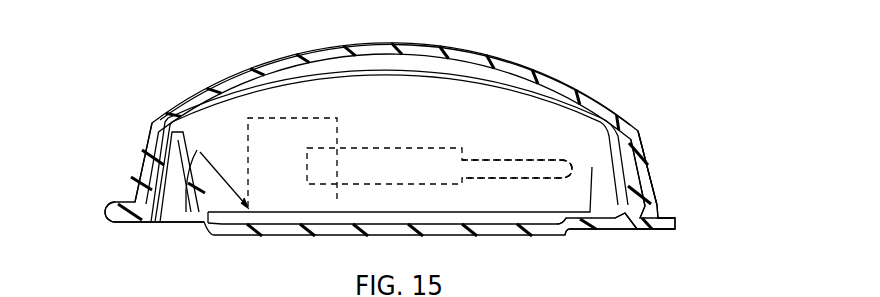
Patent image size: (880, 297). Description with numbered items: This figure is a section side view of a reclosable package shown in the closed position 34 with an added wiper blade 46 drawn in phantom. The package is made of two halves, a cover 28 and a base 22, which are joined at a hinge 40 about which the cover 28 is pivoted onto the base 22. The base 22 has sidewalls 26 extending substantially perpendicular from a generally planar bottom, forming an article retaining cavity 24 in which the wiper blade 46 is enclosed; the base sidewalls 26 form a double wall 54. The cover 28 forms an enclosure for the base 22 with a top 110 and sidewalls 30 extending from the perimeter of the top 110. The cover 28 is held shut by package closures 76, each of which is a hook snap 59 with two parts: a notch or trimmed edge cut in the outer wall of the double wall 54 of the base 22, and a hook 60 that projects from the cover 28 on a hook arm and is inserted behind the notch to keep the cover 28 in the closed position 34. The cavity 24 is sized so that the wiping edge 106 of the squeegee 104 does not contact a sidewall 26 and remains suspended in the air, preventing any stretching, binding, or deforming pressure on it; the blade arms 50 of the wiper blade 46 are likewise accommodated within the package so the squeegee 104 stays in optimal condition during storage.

The base 22 is at (566, 242).
The article retaining cavity 24 is at (478, 102).
The sidewalls 26 is at (197, 150).
The cover 28 is at (428, 45).
The sidewalls 30 is at (147, 157).
The closed position 34 is at (673, 70).
The hinge 40 is at (115, 207).
The wiper blade 46 is at (347, 143).
The blade arms 50 is at (263, 147).
The double wall 54 is at (165, 173).
The hook snap 59 is at (607, 235).
The hook 60 is at (635, 157).
The package closures 76 is at (632, 238).
The squeegee 104 is at (520, 163).
The wiping edge 106 is at (572, 168).
The top 110 is at (250, 68).